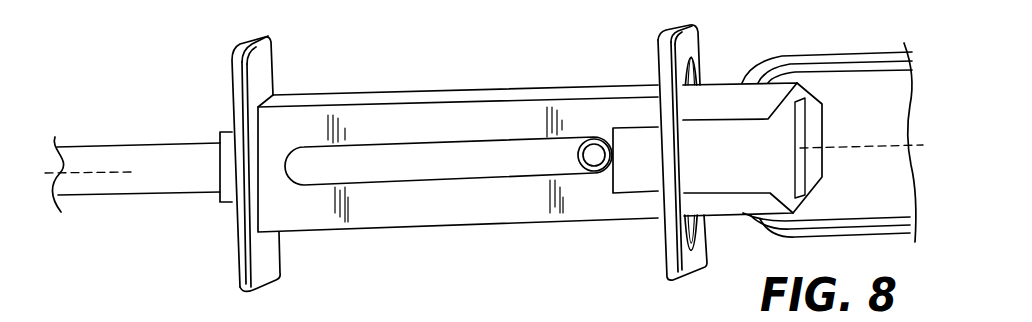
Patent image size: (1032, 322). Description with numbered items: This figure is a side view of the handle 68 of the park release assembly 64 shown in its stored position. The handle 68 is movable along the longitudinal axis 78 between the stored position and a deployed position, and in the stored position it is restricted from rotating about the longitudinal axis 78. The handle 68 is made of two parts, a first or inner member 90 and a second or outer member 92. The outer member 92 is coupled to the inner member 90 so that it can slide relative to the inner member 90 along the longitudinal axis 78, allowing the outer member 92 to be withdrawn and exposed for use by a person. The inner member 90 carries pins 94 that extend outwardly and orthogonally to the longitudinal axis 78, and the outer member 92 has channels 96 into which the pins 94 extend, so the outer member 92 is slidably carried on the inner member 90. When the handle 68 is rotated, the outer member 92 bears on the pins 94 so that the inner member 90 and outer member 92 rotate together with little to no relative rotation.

The park release assembly 64 is at (176, 67).
The handle 68 is at (597, 66).
The longitudinal axis 78 is at (870, 147).
The inner member 90 is at (322, 167).
The outer member 92 is at (448, 113).
The pins 94 is at (588, 163).
The channels 96 is at (396, 178).